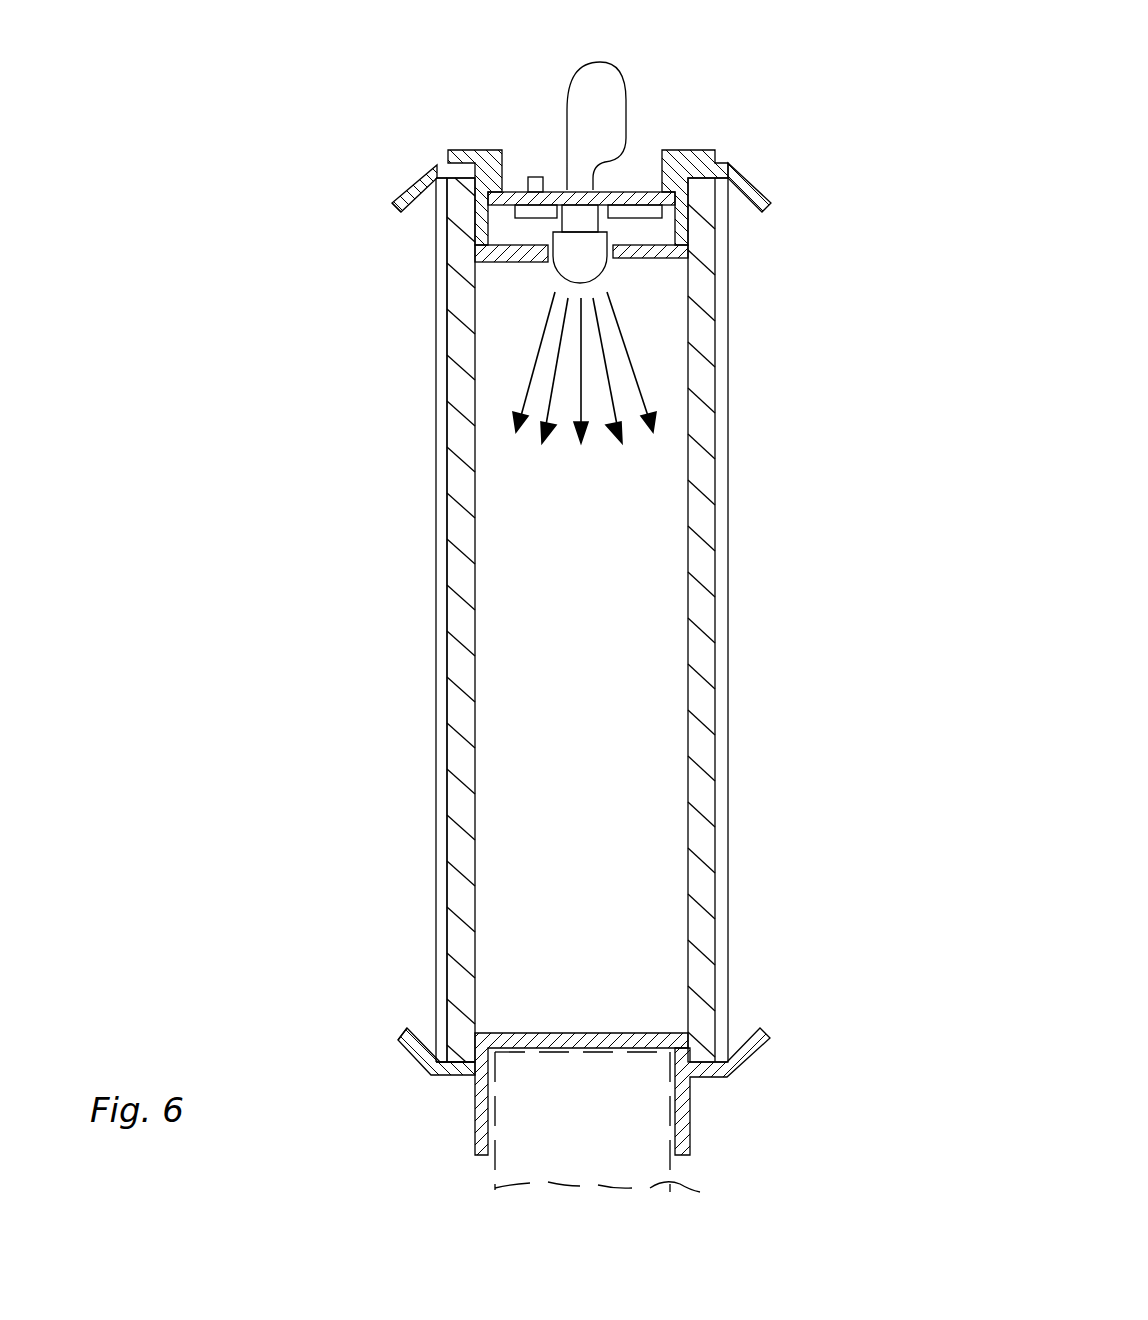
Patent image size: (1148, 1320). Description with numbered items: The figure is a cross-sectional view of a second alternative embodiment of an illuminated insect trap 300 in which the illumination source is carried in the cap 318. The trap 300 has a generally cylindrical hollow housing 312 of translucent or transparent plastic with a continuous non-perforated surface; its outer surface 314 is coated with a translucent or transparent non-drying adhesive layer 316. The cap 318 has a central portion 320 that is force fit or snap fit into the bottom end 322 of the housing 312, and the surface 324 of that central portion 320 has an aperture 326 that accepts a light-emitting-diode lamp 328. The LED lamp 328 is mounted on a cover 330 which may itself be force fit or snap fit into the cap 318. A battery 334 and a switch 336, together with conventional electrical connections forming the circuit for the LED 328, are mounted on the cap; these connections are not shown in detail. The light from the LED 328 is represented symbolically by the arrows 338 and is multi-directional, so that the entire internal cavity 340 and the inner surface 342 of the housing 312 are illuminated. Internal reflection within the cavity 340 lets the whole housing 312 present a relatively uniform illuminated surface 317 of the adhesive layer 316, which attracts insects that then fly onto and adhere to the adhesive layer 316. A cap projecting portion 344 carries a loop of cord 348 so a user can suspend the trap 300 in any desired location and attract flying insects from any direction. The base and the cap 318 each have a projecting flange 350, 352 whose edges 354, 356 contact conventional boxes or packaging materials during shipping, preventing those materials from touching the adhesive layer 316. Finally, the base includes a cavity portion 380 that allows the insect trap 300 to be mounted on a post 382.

The illuminated insect trap 300 is at (756, 36).
The housing 312 is at (455, 890).
The outer surface 314 is at (447, 835).
The adhesive layer 316 is at (444, 788).
The illuminated surface 317 is at (434, 732).
The cap 318 is at (432, 163).
The central portion 320 is at (658, 238).
The bottom end 322 is at (455, 225).
The surface 324 is at (665, 258).
The aperture 326 is at (555, 275).
The LED lamp 328 is at (590, 258).
The cover 330 is at (714, 151).
The battery 334 is at (632, 210).
The switch 336 is at (538, 178).
The arrows 338 is at (540, 468).
The internal cavity 340 is at (643, 558).
The inner surface 342 is at (688, 730).
The cap projecting portion 344 is at (431, 1076).
The loop of cord 348 is at (626, 96).
The projecting flange 350 is at (402, 1032).
The projecting flange 352 is at (415, 182).
The edge 354 is at (405, 1036).
The edge 356 is at (392, 205).
The cavity portion 380 is at (690, 1100).
The post 382 is at (700, 1192).